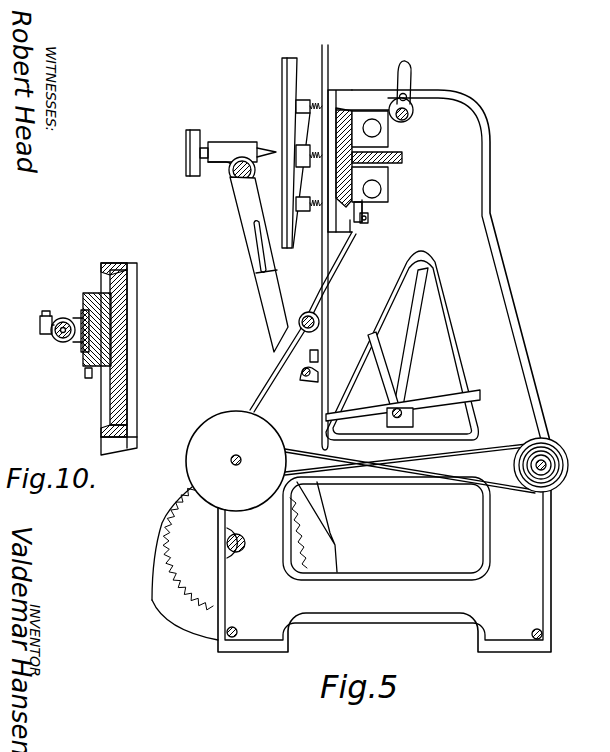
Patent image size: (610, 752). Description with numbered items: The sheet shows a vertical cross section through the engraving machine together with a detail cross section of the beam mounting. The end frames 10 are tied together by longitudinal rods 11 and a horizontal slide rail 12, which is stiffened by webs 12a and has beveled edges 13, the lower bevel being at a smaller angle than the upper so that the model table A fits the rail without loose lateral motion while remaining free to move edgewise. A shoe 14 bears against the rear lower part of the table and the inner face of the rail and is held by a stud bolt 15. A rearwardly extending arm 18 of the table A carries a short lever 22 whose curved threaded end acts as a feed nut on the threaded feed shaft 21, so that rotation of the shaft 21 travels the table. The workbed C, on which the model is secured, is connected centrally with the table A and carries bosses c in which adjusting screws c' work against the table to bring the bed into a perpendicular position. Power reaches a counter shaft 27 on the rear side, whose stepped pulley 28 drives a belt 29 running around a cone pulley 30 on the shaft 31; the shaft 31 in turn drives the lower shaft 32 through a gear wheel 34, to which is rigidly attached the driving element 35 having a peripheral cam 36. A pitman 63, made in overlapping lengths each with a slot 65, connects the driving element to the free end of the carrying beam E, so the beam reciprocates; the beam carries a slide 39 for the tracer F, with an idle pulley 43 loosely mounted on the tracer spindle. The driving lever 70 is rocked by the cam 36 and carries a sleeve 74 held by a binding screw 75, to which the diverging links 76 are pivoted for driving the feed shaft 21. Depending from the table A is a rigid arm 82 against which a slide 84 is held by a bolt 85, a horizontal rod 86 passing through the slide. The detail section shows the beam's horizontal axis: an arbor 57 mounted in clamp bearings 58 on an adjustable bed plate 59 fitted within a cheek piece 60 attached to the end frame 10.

In FIG. 5, the end frames 10 is at (527, 312).
In FIG. 10, the end frames 10 is at (126, 318).
In FIG. 5, the longitudinal rods 11 is at (300, 322).
In FIG. 5, the slide rail 12 is at (388, 139).
In FIG. 5, the webs 12a is at (402, 160).
In FIG. 5, the beveled edges 13 is at (340, 106).
In FIG. 5, the shoe 14 is at (364, 206).
In FIG. 5, the stud bolt 15 is at (368, 222).
In FIG. 5, the rearwardly extending arm 18 is at (367, 100).
In FIG. 5, the feed shaft 21 is at (408, 114).
In FIG. 5, the short lever 22 is at (411, 70).
In FIG. 5, the longitudinal shaft 27 is at (547, 460).
In FIG. 5, the stepped or coned pulley 28 is at (568, 466).
In FIG. 5, the belt 29 is at (490, 450).
In FIG. 5, the cone pulley 30 is at (203, 424).
In FIG. 5, the shaft 31 is at (240, 456).
In FIG. 5, the shaft 32 is at (241, 553).
In FIG. 5, the gear wheel 34 is at (180, 536).
In FIG. 5, the driving element 35 is at (153, 583).
In FIG. 5, the peripheral cam 36 is at (178, 628).
In FIG. 5, the slide 39 is at (218, 142).
In FIG. 5, the idle pulley 43 is at (186, 170).
In FIG. 10, the arbor 57 is at (66, 345).
In FIG. 10, the clamps or bearings 58 is at (52, 337).
In FIG. 10, the adjustable bed 59 is at (83, 314).
In FIG. 10, the cheek piece 60 is at (95, 293).
In FIG. 5, the pitman 63 is at (246, 220).
In FIG. 5, the slot 65 is at (262, 262).
In FIG. 5, the driving lever 70 is at (466, 408).
In FIG. 5, the sleeve 74 is at (438, 400).
In FIG. 5, the binding screw 75 is at (392, 413).
In FIG. 5, the links 76 is at (378, 350).
In FIG. 5, the rigid arm 82 is at (330, 290).
In FIG. 5, the slide 84 is at (312, 380).
In FIG. 5, the bolt 85 is at (308, 355).
In FIG. 5, the horizontal rod 86 is at (300, 372).
In FIG. 5, the model table A is at (323, 245).
In FIG. 5, the workbed C is at (296, 58).
In FIG. 5, the bosses c is at (290, 140).
In FIG. 5, the adjusting screws c' is at (289, 171).
In FIG. 5, the carrying beam E is at (232, 180).
In FIG. 5, the tracer F is at (258, 138).